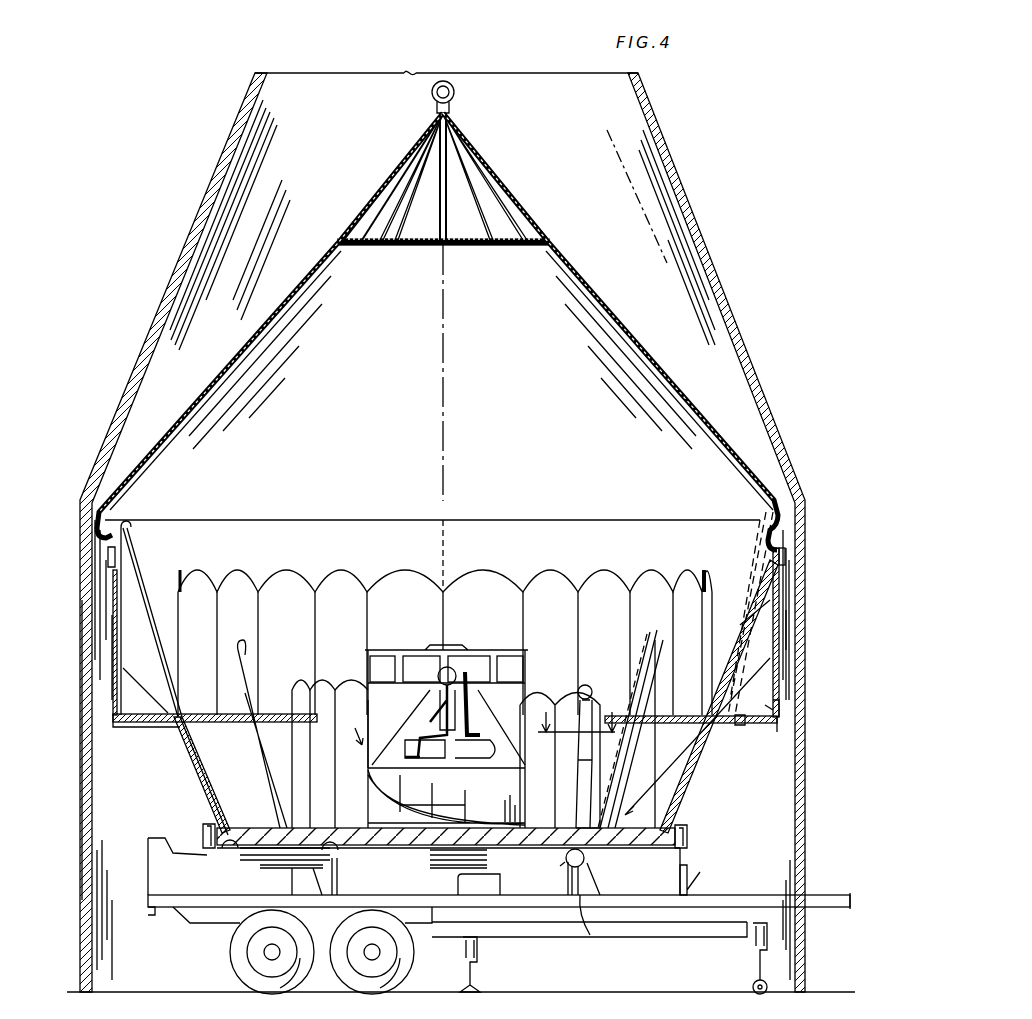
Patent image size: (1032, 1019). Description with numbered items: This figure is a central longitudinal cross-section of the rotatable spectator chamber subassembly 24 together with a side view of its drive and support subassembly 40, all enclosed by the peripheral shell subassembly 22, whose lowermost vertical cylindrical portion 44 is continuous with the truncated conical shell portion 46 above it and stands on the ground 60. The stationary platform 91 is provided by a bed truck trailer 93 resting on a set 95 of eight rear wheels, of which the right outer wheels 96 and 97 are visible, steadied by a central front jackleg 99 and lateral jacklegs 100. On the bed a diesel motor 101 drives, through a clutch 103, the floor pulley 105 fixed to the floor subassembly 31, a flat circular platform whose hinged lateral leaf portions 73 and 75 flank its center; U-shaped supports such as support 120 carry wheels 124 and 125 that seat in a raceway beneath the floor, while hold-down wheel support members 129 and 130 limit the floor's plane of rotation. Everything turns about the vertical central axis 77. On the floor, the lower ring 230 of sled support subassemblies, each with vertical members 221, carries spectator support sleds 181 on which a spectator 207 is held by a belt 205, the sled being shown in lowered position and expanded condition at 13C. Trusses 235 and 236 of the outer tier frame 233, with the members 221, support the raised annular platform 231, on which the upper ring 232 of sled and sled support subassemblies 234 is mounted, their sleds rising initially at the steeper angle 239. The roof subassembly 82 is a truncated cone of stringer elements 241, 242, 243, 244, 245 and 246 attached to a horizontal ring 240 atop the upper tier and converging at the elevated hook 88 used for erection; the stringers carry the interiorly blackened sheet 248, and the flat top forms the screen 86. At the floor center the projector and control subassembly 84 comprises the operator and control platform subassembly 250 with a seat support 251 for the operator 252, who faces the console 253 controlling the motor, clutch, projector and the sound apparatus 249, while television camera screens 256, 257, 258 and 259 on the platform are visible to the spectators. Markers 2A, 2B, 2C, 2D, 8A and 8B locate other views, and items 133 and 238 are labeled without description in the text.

The peripheral shell subassembly 22 is at (815, 767).
The rotatable spectator chamber subassembly 24 is at (112, 655).
The floor subassembly 31 is at (262, 826).
The drive and support subassembly 40 is at (148, 913).
The lowermost vertical cylindrical portion 44 is at (80, 820).
The truncated conical shell portion 46 is at (115, 410).
The ground 60 is at (142, 992).
The lateral leaf portion 73 is at (612, 865).
The lateral leaf portion 75 is at (312, 828).
The vertical central shell axis 77 is at (438, 570).
The theater ceiling subassembly 82 is at (748, 441).
The projector and control subassembly 84 is at (355, 727).
The screen 86 is at (490, 247).
The elevated hook 88 is at (430, 100).
The platform 91 is at (772, 902).
The bed truck trailer 93 is at (830, 889).
The set of rear wheels 95 is at (266, 998).
The right outer wheel 96 is at (290, 988).
The right outer wheel 97 is at (390, 990).
The central front jackleg 99 is at (755, 962).
The lateral jackleg 100 is at (474, 972).
The diesel motor 101 is at (213, 889).
The clutch 103 is at (294, 889).
The floor pulley 105 is at (479, 884).
The U-shaped floor support 120 is at (592, 932).
The support wheel 124 is at (340, 865).
The support wheel 125 is at (560, 866).
The hold-down wheel support member 129 is at (688, 866).
The hold-down wheel support member 130 is at (202, 835).
The brace 133 is at (212, 806).
The spectator support sled subassembly 181 is at (650, 660).
The spectator belt 205 is at (578, 755).
The spectator 207 is at (578, 815).
The vertical member 221 is at (671, 734).
The lower ring of sled support subassemblies 230 is at (326, 700).
The annular tier support platform 231 is at (200, 712).
The upper ring of sled and sled support subassemblies 232 is at (113, 601).
The outer tier frame 233 is at (710, 762).
The upper tier sled and sled support subassembly 234 is at (745, 549).
The truss 235 is at (205, 772).
The truss 236 is at (705, 785).
The bracket 238 is at (770, 705).
The sled movement angle 239 is at (745, 725).
The horizontal ring 240 is at (786, 580).
The roof stringer element 241 is at (420, 150).
The roof stringer element 242 is at (410, 180).
The roof stringer element 243 is at (384, 176).
The roof stringer element 244 is at (368, 200).
The roof stringer element 245 is at (478, 168).
The roof stringer element 246 is at (523, 210).
The interior sheet 248 is at (268, 500).
The sound apparatus 249 is at (392, 751).
The operator and control platform subassembly 250 is at (378, 790).
The seat support 251 is at (450, 753).
The operator 252 is at (470, 700).
The instrument dial and control handle console 253 is at (386, 729).
The television camera screen 256 is at (380, 660).
The television camera screen 257 is at (415, 660).
The television camera screen 258 is at (470, 662).
The television camera screen 259 is at (515, 664).
The section line 2A is at (826, 495).
The section line 2B is at (845, 501).
The section line 2C is at (443, 59).
The section line 2D is at (443, 59).
The section line 8A is at (571, 711).
The section line 8B is at (615, 705).
The expanded sled condition location 13C is at (566, 810).